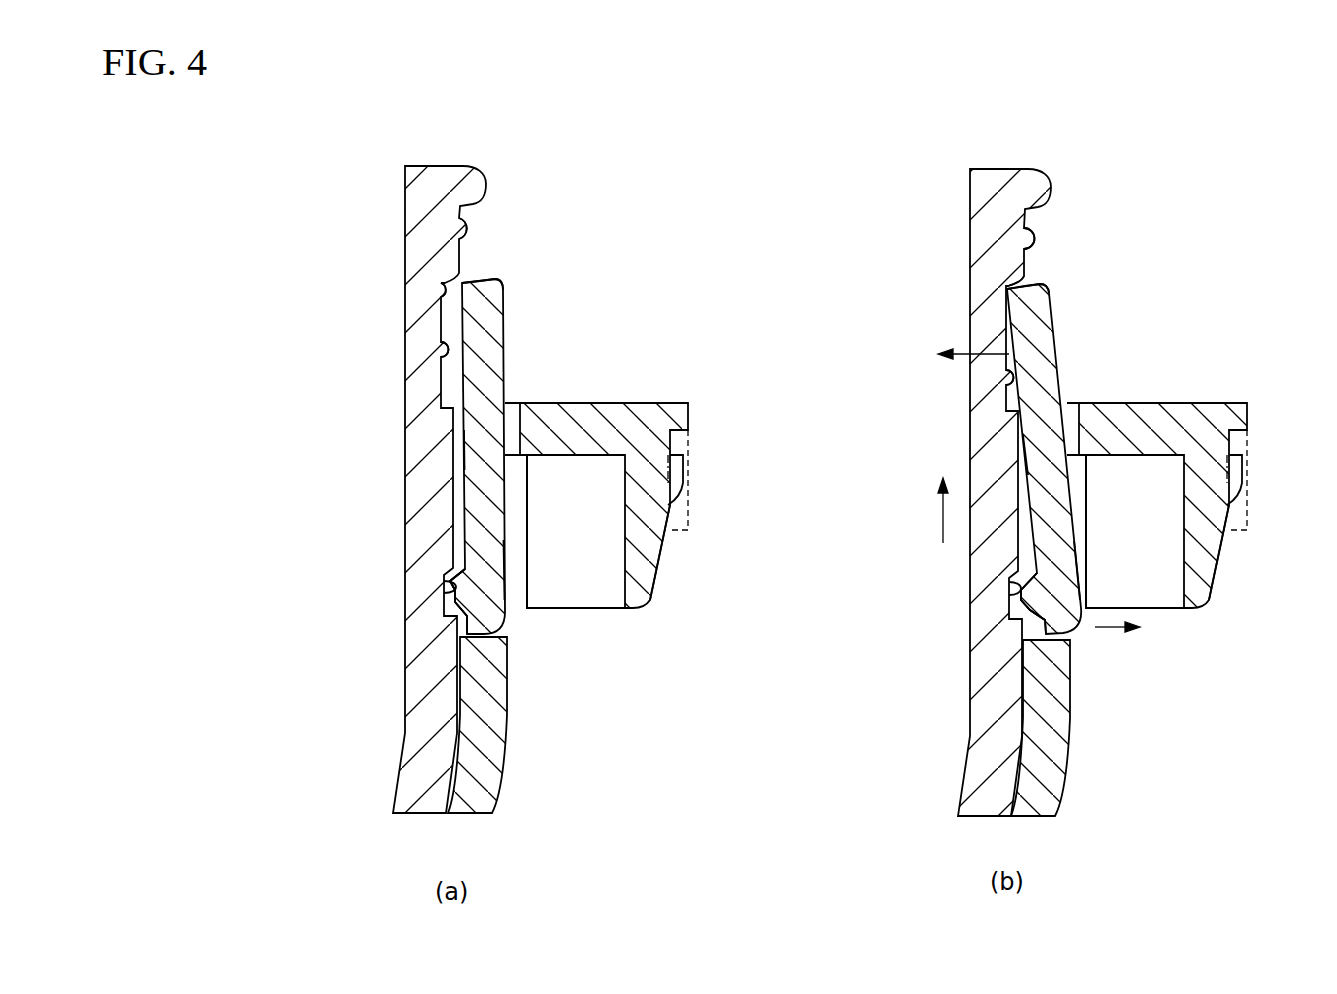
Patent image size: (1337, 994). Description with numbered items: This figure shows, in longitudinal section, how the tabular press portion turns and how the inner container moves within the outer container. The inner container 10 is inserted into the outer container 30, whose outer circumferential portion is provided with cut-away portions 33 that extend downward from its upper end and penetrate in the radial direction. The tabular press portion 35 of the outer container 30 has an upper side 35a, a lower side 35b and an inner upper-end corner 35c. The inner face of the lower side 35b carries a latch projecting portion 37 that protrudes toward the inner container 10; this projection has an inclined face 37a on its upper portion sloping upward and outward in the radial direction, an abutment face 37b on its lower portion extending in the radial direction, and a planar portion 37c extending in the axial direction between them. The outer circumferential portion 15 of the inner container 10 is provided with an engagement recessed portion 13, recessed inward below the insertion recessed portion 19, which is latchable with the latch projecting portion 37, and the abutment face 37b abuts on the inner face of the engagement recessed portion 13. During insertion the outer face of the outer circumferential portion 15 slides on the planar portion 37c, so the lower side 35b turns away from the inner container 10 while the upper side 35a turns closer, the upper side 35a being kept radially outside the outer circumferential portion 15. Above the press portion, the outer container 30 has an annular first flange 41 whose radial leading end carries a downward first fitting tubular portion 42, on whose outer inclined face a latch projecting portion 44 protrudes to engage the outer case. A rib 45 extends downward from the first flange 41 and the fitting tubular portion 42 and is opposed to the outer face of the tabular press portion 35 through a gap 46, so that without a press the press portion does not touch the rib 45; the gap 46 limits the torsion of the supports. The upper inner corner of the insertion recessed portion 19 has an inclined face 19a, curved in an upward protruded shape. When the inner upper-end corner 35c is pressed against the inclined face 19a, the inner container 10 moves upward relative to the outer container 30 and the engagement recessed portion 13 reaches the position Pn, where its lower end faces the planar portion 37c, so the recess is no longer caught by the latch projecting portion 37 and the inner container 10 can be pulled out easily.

The inner container 10 is at (499, 178).
The engagement recessed portion 13 is at (445, 591).
The outer circumferential portion 15 is at (460, 235).
The insertion recessed portion 19 is at (446, 357).
The inclined face 19a is at (441, 293).
The outer container 30 is at (534, 718).
The cut-away portion 33 is at (475, 447).
The tabular press portion 35 is at (503, 340).
The upper side 35a is at (495, 292).
The lower side 35b is at (495, 570).
The inner upper-end corner 35c is at (470, 283).
The latch projecting portion 37 is at (515, 592).
The inclined face 37a is at (457, 573).
The abutment face 37b is at (462, 637).
The planar portion 37c is at (445, 598).
The first flange 41 is at (678, 410).
The first fitting tubular portion 42 is at (648, 553).
The latch projecting portion 44 is at (678, 467).
The rib 45 is at (593, 590).
The gap 46 is at (517, 593).
The position enabling getting over Pn is at (1006, 548).